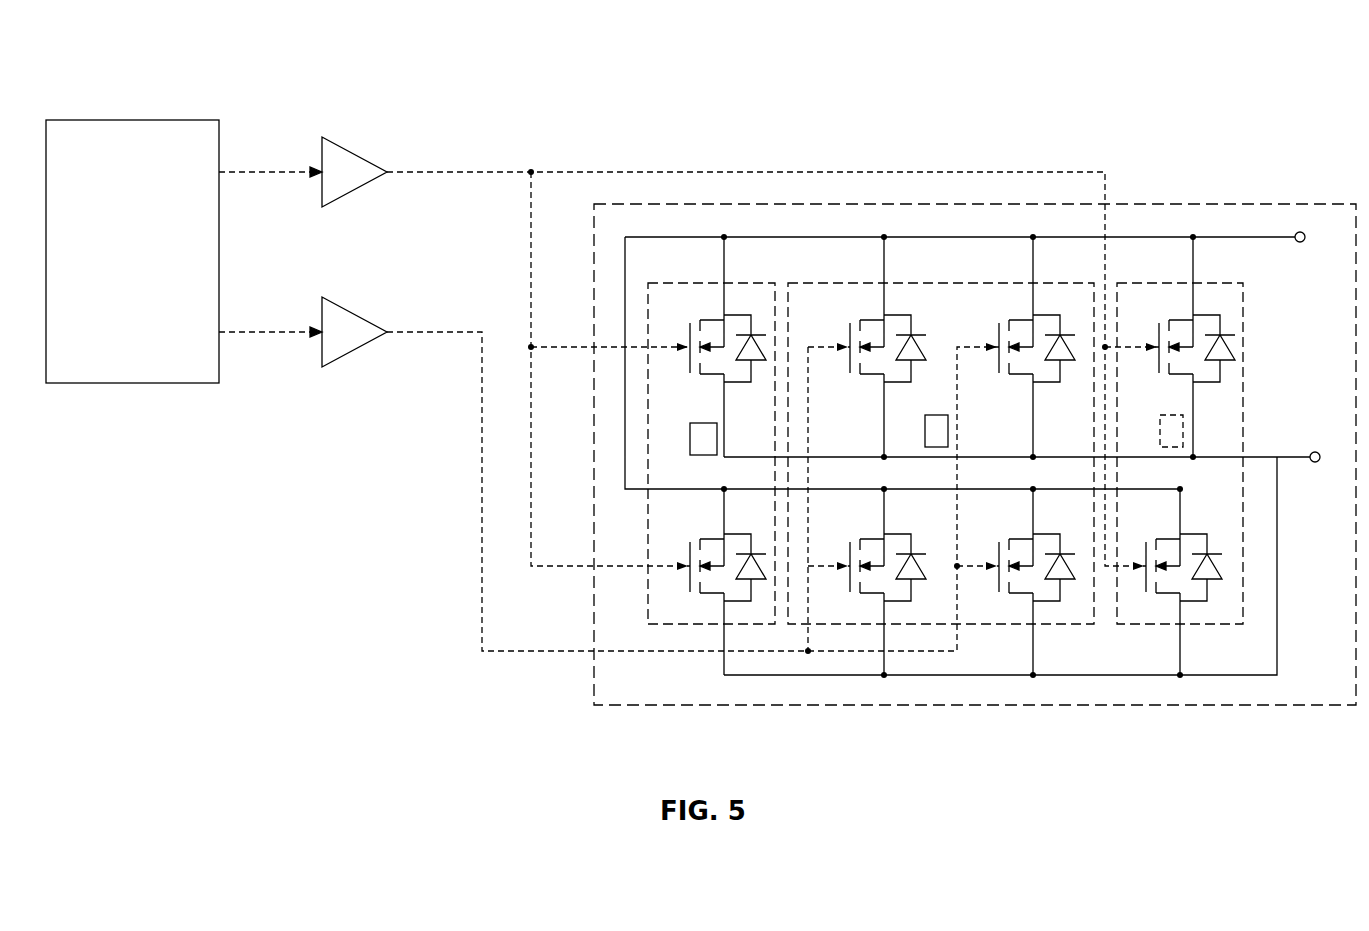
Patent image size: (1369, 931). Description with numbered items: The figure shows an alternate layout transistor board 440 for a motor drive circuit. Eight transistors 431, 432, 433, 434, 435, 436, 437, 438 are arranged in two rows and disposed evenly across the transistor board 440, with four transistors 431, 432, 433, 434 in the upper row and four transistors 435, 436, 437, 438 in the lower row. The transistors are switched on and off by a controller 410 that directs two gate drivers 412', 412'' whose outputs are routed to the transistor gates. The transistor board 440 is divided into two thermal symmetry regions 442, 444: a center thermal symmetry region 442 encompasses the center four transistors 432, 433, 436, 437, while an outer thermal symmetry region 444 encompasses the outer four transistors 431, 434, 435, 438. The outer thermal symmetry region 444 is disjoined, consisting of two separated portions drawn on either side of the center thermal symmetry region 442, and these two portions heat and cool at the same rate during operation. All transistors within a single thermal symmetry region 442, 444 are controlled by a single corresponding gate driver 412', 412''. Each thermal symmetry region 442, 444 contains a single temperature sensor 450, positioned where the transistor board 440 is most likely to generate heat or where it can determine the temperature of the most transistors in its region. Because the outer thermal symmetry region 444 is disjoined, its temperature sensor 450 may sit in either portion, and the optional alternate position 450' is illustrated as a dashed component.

The controller 410 is at (133, 120).
The gate driver 412' is at (312, 146).
The gate driver 412'' is at (317, 307).
The transistor 431 is at (710, 313).
The transistor 432 is at (870, 313).
The transistor 433 is at (1045, 302).
The transistor 434 is at (1222, 328).
The transistor 435 is at (735, 600).
The transistor 436 is at (897, 600).
The transistor 437 is at (1046, 600).
The transistor 438 is at (1196, 600).
The transistor board 440 is at (1265, 272).
The center thermal symmetry region 442 is at (960, 283).
The outer thermal symmetry region 444 is at (735, 283).
The temperature sensor 450 is at (793, 423).
The optional alternate position 450' is at (1237, 414).